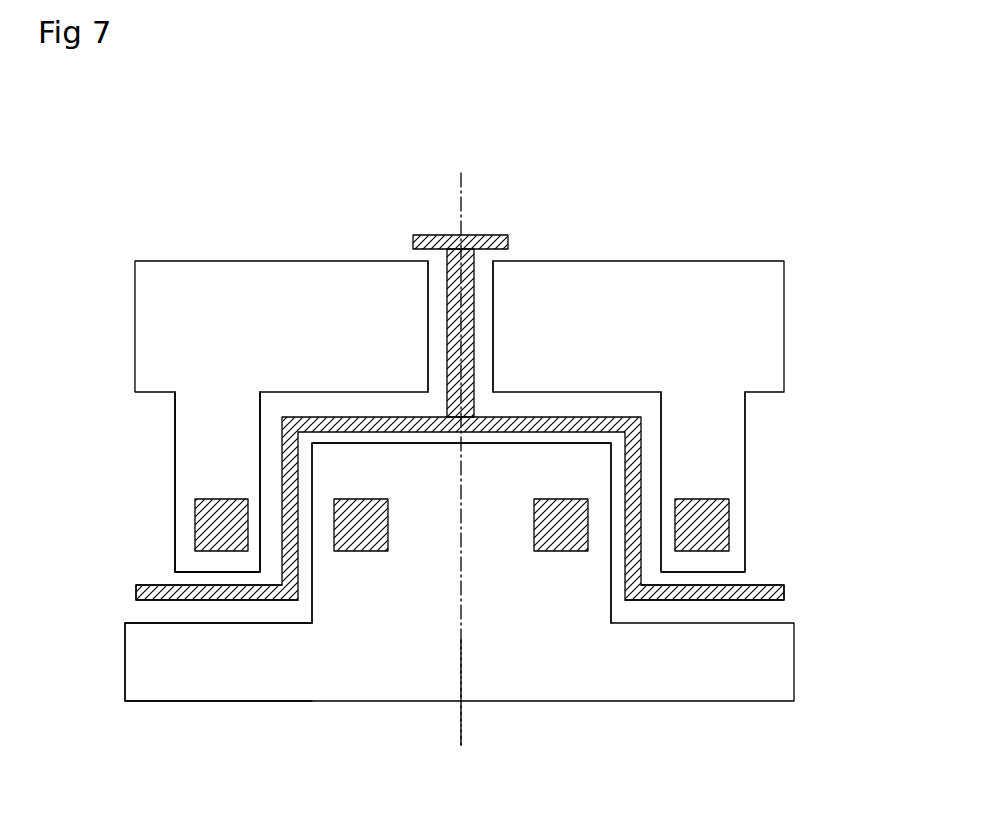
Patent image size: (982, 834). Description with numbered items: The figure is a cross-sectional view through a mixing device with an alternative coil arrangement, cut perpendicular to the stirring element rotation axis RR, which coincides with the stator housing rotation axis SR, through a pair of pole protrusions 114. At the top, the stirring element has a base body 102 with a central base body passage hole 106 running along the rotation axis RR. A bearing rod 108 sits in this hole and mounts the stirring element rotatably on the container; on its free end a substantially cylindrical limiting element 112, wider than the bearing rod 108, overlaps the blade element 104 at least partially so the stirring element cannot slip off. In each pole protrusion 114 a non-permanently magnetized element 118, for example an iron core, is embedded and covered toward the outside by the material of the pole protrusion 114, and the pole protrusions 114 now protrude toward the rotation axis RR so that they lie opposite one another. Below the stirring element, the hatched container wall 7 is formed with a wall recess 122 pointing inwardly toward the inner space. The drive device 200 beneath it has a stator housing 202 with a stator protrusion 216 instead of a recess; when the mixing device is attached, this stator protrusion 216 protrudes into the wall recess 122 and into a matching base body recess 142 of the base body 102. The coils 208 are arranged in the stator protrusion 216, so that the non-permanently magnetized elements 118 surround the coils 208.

The container wall 7 is at (145, 586).
The base body 102 is at (197, 463).
The blade element 104 is at (172, 310).
The base body passage hole 106 is at (432, 356).
The bearing rod 108 is at (475, 285).
The limiting element 112 is at (437, 235).
The pole protrusions 114 is at (248, 477).
The non-permanently magnetized element 118 is at (215, 528).
The wall recess 122 is at (627, 562).
The base body recess 142 is at (603, 390).
The drive device 200 is at (728, 682).
The stator housing 202 is at (150, 680).
The coils 208 is at (363, 527).
The stator protrusion 216 is at (312, 597).
The stirring element rotation axis RR is at (465, 195).
The stator housing rotation axis SR is at (463, 733).